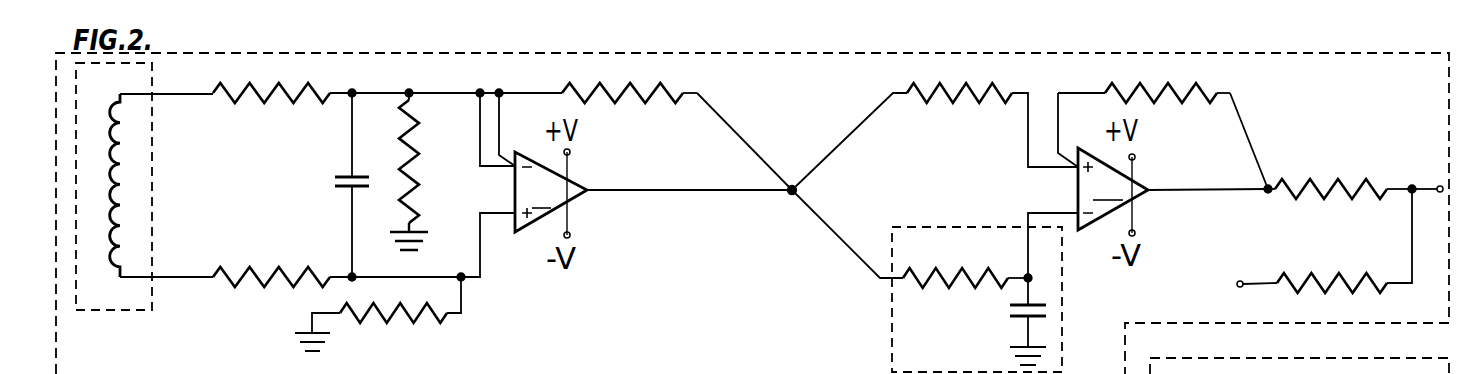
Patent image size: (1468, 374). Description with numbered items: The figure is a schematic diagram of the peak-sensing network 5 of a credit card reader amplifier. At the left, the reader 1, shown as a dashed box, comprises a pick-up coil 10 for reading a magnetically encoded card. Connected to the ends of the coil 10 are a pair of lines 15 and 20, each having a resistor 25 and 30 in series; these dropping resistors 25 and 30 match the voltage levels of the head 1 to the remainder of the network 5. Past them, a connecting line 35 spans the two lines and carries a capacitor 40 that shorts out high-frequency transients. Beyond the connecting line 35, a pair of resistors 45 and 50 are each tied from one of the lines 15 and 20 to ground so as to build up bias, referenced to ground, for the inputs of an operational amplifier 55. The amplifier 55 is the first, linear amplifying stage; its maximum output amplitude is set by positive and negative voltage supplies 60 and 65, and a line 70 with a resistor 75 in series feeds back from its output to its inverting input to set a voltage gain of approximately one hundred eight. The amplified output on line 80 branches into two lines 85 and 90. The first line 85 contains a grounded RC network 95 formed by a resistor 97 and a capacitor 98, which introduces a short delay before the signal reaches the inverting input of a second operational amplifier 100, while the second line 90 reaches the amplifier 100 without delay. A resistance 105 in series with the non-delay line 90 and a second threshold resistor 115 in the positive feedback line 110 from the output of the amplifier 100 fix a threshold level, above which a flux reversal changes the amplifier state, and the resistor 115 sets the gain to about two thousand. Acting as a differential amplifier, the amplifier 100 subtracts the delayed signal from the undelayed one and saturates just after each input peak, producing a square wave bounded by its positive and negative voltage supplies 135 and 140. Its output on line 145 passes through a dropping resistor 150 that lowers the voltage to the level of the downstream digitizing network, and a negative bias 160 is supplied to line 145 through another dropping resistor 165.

The reader 1 is at (152, 305).
The peak-sensing network 5 is at (318, 53).
The pick-up coil 10 is at (110, 207).
The line 15 is at (178, 94).
The line 20 is at (178, 277).
The resistor 25 is at (258, 103).
The resistor 30 is at (296, 287).
The connecting line 35 is at (352, 122).
The capacitor 40 is at (333, 181).
The resistor 45 is at (409, 155).
The resistor 50 is at (420, 323).
The operational amplifier 55 is at (551, 193).
The positive voltage supply 60 is at (569, 152).
The negative voltage supply 65 is at (570, 235).
The line 70 is at (752, 152).
The resistor 75 is at (600, 103).
The line 80 is at (688, 190).
The line 85 is at (838, 237).
The line 90 is at (830, 152).
The RC network 95 is at (892, 310).
The resistor 97 is at (950, 272).
The capacitor 98 is at (1008, 308).
The operational amplifier 100 is at (1113, 190).
The resistance 105 is at (930, 103).
The line 110 is at (1250, 133).
The second threshold resistor 115 is at (1162, 103).
The positive voltage supply 135 is at (1134, 157).
The negative voltage supply 140 is at (1134, 233).
The line 145 is at (1430, 185).
The dropping resistor 150 is at (1308, 180).
The negative bias 160 is at (1262, 283).
The dropping resistor 165 is at (1335, 276).